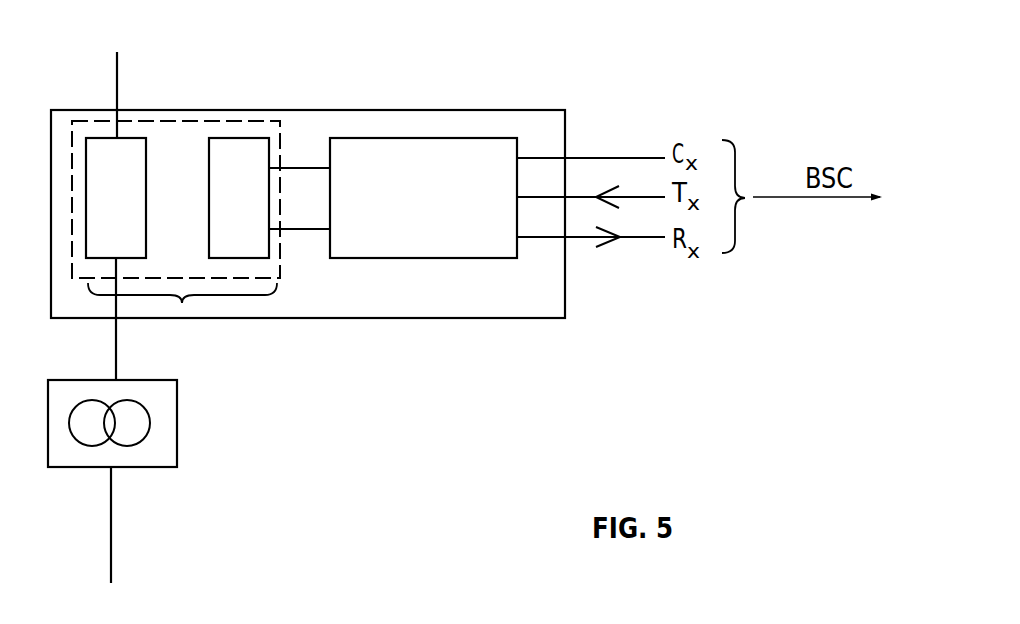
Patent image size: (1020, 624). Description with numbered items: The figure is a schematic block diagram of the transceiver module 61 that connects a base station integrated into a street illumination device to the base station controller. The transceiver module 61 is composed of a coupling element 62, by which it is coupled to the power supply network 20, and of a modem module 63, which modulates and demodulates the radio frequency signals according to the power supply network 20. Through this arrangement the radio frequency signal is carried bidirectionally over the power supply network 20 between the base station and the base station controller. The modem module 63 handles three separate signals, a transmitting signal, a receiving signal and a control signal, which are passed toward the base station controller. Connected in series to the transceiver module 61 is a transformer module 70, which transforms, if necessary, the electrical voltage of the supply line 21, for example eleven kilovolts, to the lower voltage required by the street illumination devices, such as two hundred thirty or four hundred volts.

The power supply network 20 is at (118, 62).
The transceiver module 61 is at (315, 120).
The coupling element 62 is at (182, 303).
The modem module 63 is at (423, 245).
The transformer module 70 is at (155, 434).
The supply line 21 is at (110, 533).